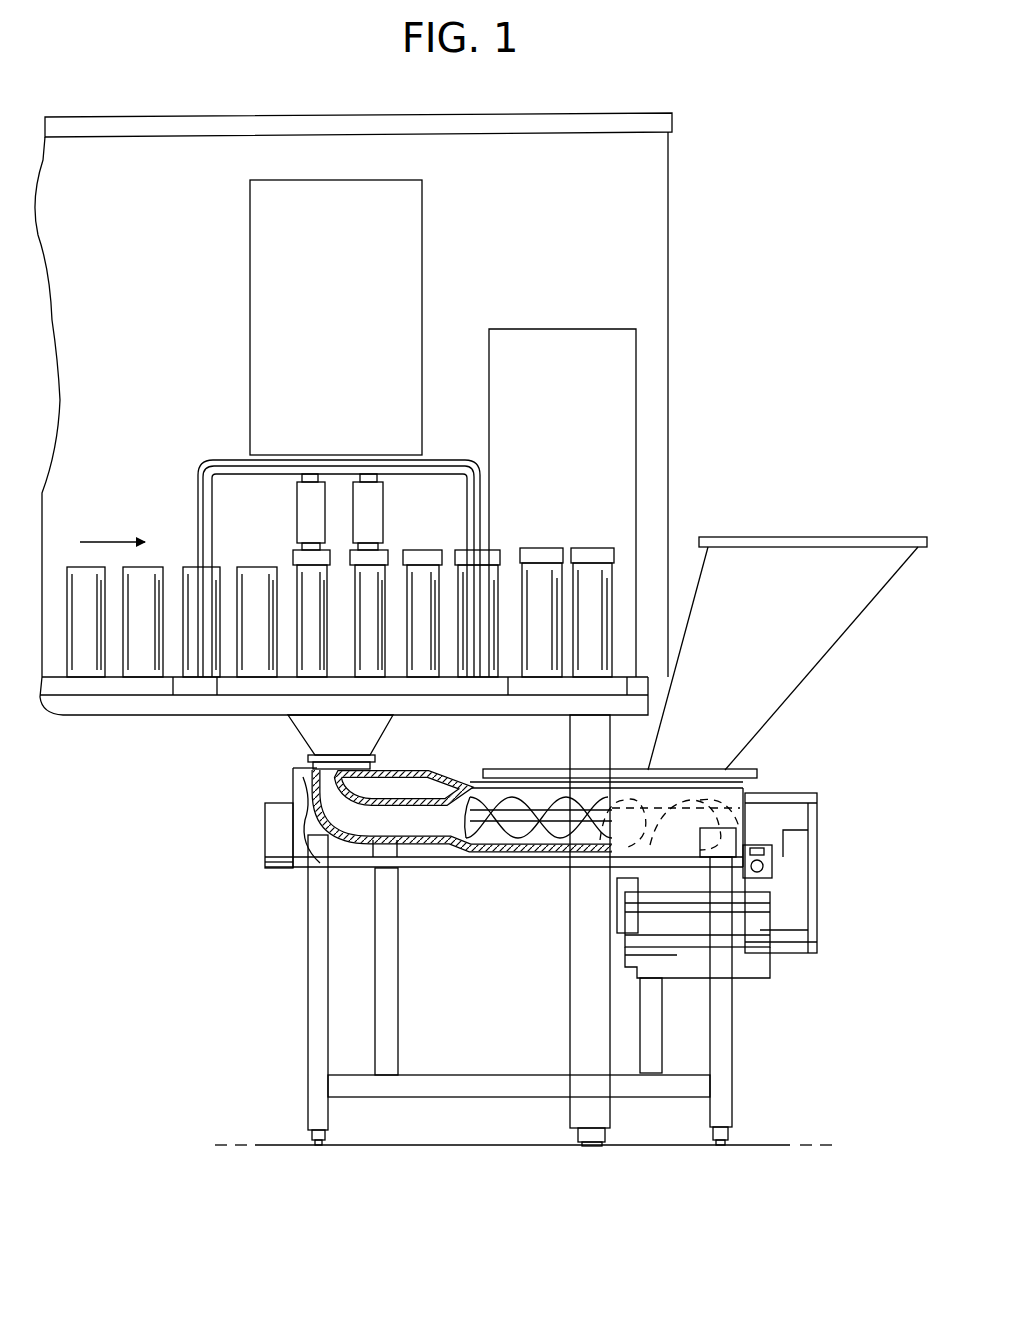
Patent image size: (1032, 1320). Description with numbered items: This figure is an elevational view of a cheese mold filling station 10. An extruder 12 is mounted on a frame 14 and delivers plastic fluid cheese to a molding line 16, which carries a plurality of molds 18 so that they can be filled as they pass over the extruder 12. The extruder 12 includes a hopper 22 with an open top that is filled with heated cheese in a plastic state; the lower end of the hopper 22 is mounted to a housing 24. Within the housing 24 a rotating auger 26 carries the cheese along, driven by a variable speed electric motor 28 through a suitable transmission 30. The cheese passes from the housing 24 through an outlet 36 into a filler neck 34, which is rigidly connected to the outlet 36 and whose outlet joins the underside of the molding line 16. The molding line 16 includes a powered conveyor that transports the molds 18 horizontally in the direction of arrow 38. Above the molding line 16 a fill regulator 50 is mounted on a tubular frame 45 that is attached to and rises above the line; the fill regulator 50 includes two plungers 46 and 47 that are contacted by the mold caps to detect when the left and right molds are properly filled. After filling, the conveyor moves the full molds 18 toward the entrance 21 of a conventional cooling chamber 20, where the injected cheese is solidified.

The cheese mold filling station 10 is at (252, 845).
The extruder 12 is at (490, 862).
The frame 14 is at (316, 1015).
The molding line 16 is at (236, 704).
The molds 18 is at (300, 575).
The cooling chamber 20 is at (657, 403).
The entrance 21 is at (634, 451).
The hopper 22 is at (838, 618).
The housing 24 is at (562, 860).
The auger 26 is at (535, 800).
The variable speed electric motor 28 is at (748, 948).
The transmission 30 is at (785, 793).
The filler neck 34 is at (340, 735).
The outlet 36 is at (300, 766).
The arrow 38 is at (108, 541).
The tubular frame 45 is at (203, 470).
The plunger 46 is at (303, 505).
The plunger 47 is at (372, 492).
The fill regulator 50 is at (319, 314).